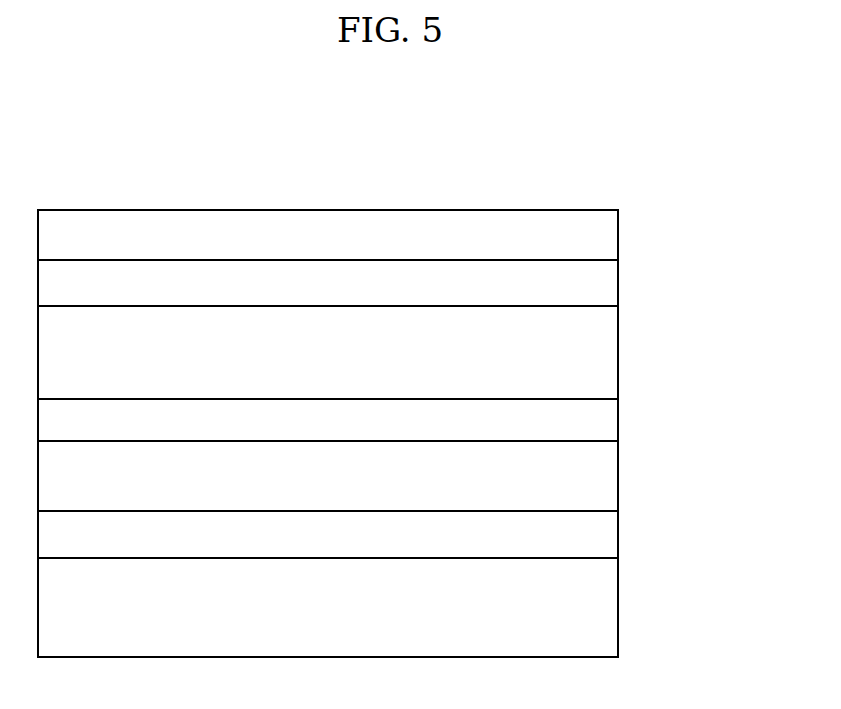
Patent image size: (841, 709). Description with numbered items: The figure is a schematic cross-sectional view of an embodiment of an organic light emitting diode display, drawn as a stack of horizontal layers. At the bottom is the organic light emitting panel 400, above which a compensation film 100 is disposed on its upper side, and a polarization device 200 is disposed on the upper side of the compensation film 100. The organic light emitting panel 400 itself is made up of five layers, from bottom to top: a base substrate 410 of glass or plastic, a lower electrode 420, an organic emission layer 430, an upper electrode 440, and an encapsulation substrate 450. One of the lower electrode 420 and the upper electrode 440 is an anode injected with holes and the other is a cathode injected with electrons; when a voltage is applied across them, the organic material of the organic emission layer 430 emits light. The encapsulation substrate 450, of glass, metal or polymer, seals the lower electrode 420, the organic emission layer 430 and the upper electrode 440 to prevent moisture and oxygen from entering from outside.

The polarization device 200 is at (616, 240).
The compensation film 100 is at (616, 285).
The organic light emitting panel 400 is at (393, 481).
The encapsulation substrate 450 is at (616, 355).
The upper electrode 440 is at (616, 423).
The organic emission layer 430 is at (616, 478).
The lower electrode 420 is at (616, 538).
The base substrate 410 is at (362, 607).